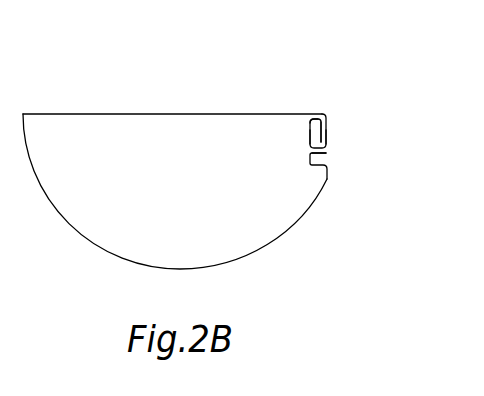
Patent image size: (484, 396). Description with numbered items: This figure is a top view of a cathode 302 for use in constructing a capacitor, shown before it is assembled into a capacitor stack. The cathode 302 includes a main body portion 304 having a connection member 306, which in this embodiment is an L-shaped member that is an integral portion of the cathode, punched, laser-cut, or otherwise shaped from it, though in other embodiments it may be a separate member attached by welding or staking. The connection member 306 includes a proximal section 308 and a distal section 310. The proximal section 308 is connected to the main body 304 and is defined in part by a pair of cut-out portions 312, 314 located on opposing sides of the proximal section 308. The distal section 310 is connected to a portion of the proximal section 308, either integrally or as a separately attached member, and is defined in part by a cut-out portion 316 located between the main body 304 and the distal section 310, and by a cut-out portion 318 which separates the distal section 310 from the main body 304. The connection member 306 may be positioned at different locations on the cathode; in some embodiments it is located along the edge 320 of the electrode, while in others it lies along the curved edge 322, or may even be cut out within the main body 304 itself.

The cathode 302 is at (95, 68).
The main body portion 304 is at (201, 248).
The connection member 306 is at (327, 134).
The proximal section 308 is at (310, 153).
The distal section 310 is at (327, 150).
The cut-out portion 312 is at (328, 167).
The cut-out portion 314 is at (310, 142).
The cut-out portion 316 is at (324, 133).
The cut-out portion 318 is at (328, 140).
The edge 320 is at (204, 113).
The curved edge 322 is at (70, 225).